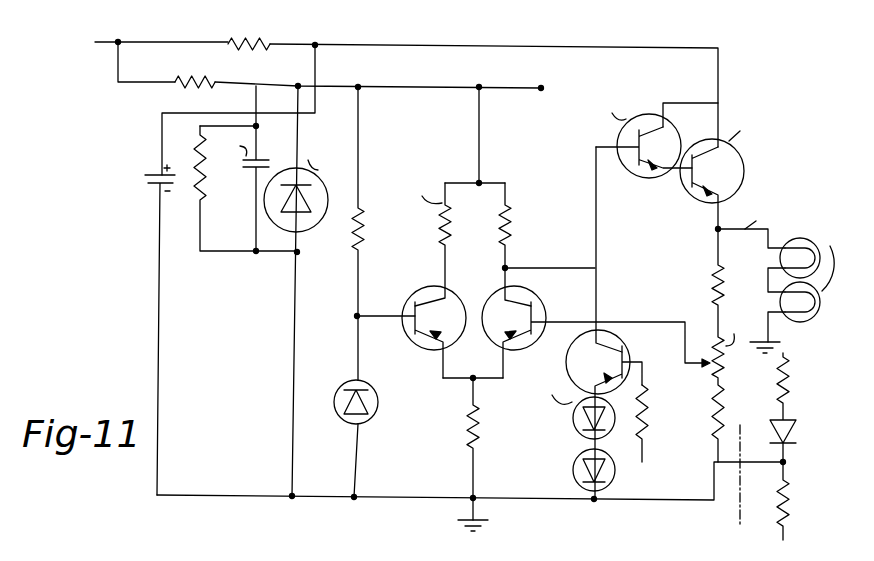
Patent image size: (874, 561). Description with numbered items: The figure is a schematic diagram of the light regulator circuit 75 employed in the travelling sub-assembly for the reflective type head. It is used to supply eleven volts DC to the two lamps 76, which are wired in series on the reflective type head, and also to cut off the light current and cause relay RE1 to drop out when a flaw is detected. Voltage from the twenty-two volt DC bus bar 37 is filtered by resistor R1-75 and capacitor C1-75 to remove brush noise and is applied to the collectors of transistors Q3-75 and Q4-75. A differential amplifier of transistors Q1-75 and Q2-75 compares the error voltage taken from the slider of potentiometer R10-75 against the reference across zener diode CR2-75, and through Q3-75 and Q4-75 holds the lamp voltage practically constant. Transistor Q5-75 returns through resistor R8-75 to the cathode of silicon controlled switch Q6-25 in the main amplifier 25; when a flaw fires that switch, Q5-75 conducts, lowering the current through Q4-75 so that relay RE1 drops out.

The light regulator circuit 75 is at (147, 287).
The lamps 76 is at (802, 246).
The main amplifier 25 is at (736, 508).
The bus bar 37 is at (128, 47).